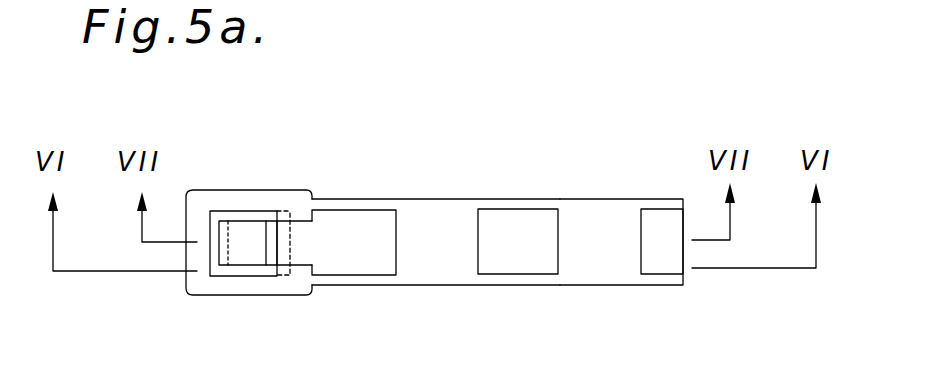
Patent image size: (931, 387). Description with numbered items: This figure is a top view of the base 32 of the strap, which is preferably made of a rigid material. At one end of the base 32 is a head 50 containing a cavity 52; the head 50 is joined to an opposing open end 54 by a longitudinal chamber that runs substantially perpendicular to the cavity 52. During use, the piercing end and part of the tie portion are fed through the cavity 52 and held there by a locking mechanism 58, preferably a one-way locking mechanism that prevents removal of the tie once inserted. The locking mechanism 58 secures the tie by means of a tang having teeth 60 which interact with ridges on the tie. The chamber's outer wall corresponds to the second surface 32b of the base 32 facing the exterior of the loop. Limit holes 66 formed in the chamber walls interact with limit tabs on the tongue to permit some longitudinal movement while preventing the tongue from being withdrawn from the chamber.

The base 32 is at (412, 180).
The second surface 32b is at (598, 227).
The head 50 is at (263, 295).
The cavity 52 is at (220, 213).
The open end 54 is at (655, 285).
The locking mechanism 58 is at (242, 248).
The teeth 60 is at (225, 248).
The limit holes 66 is at (531, 227).